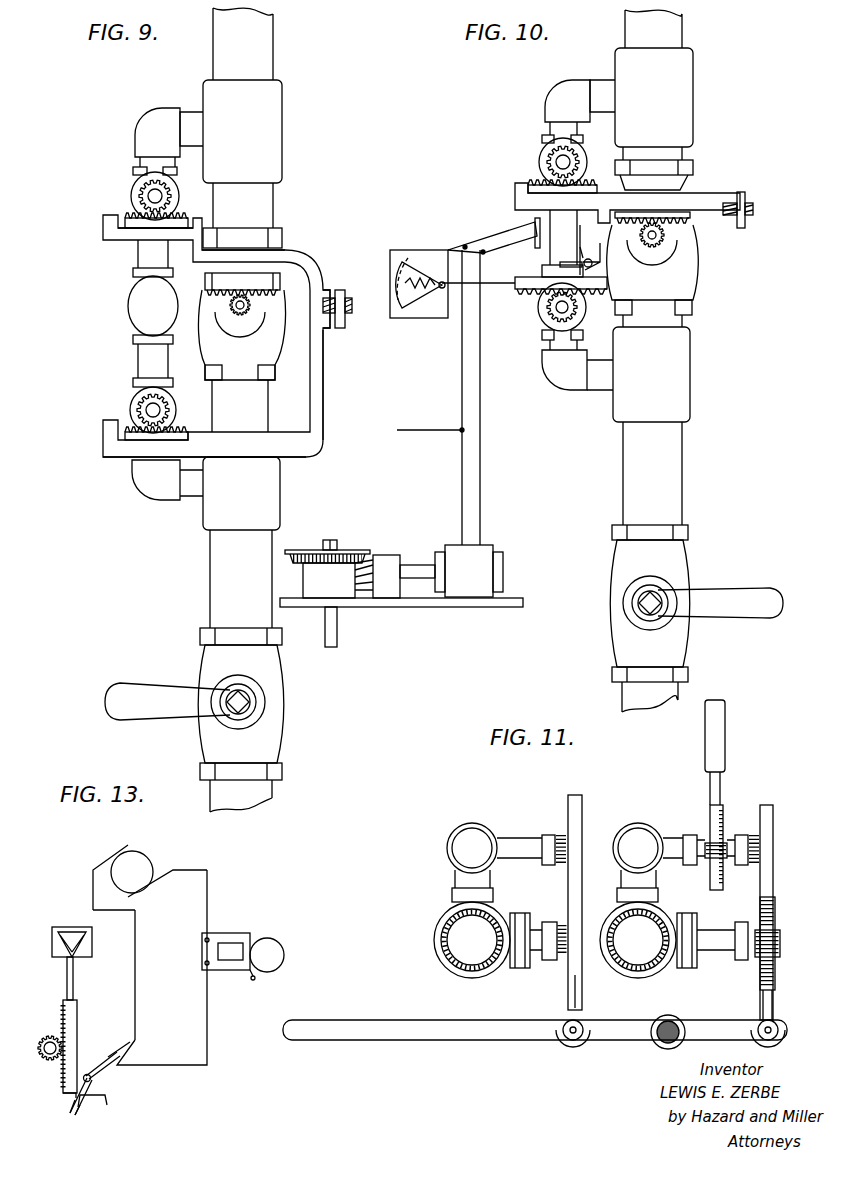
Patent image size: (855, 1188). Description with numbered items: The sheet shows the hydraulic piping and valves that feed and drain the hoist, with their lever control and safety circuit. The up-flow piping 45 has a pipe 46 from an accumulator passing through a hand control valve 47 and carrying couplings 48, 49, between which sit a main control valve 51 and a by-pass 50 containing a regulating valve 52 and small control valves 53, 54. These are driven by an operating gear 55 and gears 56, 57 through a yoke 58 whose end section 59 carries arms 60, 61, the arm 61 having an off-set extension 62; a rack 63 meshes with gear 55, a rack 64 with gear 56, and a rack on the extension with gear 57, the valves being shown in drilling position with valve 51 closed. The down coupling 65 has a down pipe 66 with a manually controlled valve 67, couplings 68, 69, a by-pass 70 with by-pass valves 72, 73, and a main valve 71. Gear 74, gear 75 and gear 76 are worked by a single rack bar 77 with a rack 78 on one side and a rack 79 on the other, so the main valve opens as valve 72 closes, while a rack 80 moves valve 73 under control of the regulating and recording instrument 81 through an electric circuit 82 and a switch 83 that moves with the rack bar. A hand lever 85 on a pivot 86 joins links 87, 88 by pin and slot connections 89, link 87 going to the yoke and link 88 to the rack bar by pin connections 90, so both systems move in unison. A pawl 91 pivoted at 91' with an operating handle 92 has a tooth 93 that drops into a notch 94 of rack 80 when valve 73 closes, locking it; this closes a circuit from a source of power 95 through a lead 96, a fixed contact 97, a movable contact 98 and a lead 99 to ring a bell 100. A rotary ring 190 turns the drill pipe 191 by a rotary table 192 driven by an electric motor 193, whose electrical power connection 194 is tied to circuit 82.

In FIG. 9, the up-flow piping 45 is at (297, 496).
In FIG. 9, the pipe 46 is at (256, 796).
In FIG. 9, the hand control valve 47 is at (274, 669).
In FIG. 9, the coupling 48 is at (274, 480).
In FIG. 11, the coupling 48 is at (494, 912).
In FIG. 9, the coupling 49 is at (275, 122).
In FIG. 9, the by-pass 50 is at (122, 285).
In FIG. 9, the main control valve 51 is at (226, 318).
In FIG. 11, the main control valve 51 is at (513, 968).
In FIG. 9, the regulating valve 52 is at (128, 310).
In FIG. 9, the by-pass valve 53 is at (132, 403).
In FIG. 11, the by-pass valve 53 is at (487, 822).
In FIG. 9, the second by-pass valve 54 is at (132, 192).
In FIG. 9, the operating gear 55 is at (242, 315).
In FIG. 11, the operating gear 55 is at (583, 925).
In FIG. 9, the operating gear 56 is at (170, 404).
In FIG. 9, the operating gear 57 is at (170, 192).
In FIG. 9, the yoke 58 is at (334, 266).
In FIG. 11, the yoke 58 is at (588, 993).
In FIG. 9, the end section 59 is at (323, 380).
In FIG. 9, the arm 60 is at (314, 452).
In FIG. 9, the arm 61 is at (282, 252).
In FIG. 9, the off-set extension 62 is at (110, 241).
In FIG. 9, the rack 63 is at (264, 283).
In FIG. 9, the rack 64 is at (126, 430).
In FIG. 10, the down coupling 65 is at (721, 147).
In FIG. 9, the down pipe 66 is at (125, 216).
In FIG. 10, the down pipe 66 is at (676, 28).
In FIG. 10, the manually controlled valve 67 is at (680, 570).
In FIG. 10, the coupling 68 is at (688, 357).
In FIG. 11, the coupling 68 is at (642, 978).
In FIG. 10, the coupling 69 is at (688, 79).
In FIG. 10, the by-pass 70 is at (534, 142).
In FIG. 10, the main valve 71 is at (703, 253).
In FIG. 11, the main valve 71 is at (680, 968).
In FIG. 10, the by-pass valve 72 is at (539, 161).
In FIG. 10, the by-pass valve 73 is at (543, 320).
In FIG. 11, the by-pass valve 73 is at (648, 822).
In FIG. 10, the operating gear 74 is at (650, 247).
In FIG. 11, the operating gear 74 is at (780, 935).
In FIG. 10, the gear 75 is at (572, 158).
In FIG. 11, the gear 75 is at (762, 842).
In FIG. 10, the gear 76 is at (572, 311).
In FIG. 11, the gear 76 is at (707, 843).
In FIG. 13, the gear 76 is at (47, 1036).
In FIG. 10, the rack bar 77 is at (730, 192).
In FIG. 11, the rack bar 77 is at (768, 815).
In FIG. 10, the rack 78 is at (668, 212).
In FIG. 11, the rack 78 is at (775, 920).
In FIG. 10, the rack 79 is at (530, 187).
In FIG. 10, the rack 80 is at (522, 292).
In FIG. 11, the rack 80 is at (724, 812).
In FIG. 13, the rack 80 is at (66, 1095).
In FIG. 10, the regulating and recording instrument 81 is at (421, 246).
In FIG. 11, the regulating and recording instrument 81 is at (726, 712).
In FIG. 13, the regulating and recording instrument 81 is at (68, 918).
In FIG. 10, the electric circuit 82 is at (466, 245).
In FIG. 10, the switch 83 is at (530, 228).
In FIG. 11, the hand lever 85 is at (470, 1032).
In FIG. 11, the pivot 86 is at (675, 1022).
In FIG. 9, the link 87 is at (348, 310).
In FIG. 11, the link 87 is at (568, 975).
In FIG. 10, the link 88 is at (753, 209).
In FIG. 11, the link 88 is at (762, 990).
In FIG. 9, the pin and slot connections 89 is at (334, 290).
In FIG. 11, the pin and slot connections 89 is at (572, 1038).
In FIG. 10, the pin connections 90 is at (746, 198).
In FIG. 11, the pin connections 90 is at (779, 1020).
In FIG. 10, the pawl 91 is at (593, 243).
In FIG. 13, the pawl 91 is at (92, 1115).
In FIG. 10, the pivot 91' is at (552, 257).
In FIG. 13, the pivot 91' is at (93, 1055).
In FIG. 13, the operating handle 92 is at (105, 1103).
In FIG. 13, the tooth 93 is at (79, 1110).
In FIG. 13, the notch 94 is at (72, 1107).
In FIG. 13, the source of power 95 is at (124, 858).
In FIG. 13, the lead 96 is at (133, 962).
In FIG. 13, the fixed contact 97 is at (117, 1045).
In FIG. 13, the movable contact 98 is at (106, 1065).
In FIG. 13, the lead 99 is at (207, 1045).
In FIG. 13, the bell 100 is at (226, 935).
In FIG. 9, the rotary ring 190 is at (359, 517).
In FIG. 9, the drill pipe 191 is at (340, 540).
In FIG. 9, the rotary table 192 is at (302, 563).
In FIG. 9, the electric motor 193 is at (466, 582).
In FIG. 9, the electrical power connection 194 is at (472, 505).